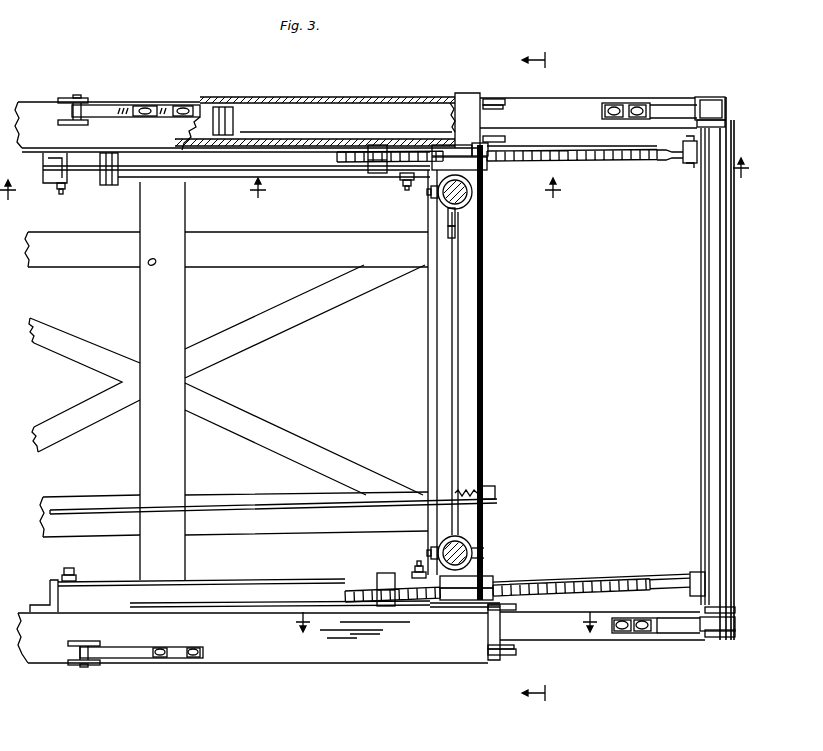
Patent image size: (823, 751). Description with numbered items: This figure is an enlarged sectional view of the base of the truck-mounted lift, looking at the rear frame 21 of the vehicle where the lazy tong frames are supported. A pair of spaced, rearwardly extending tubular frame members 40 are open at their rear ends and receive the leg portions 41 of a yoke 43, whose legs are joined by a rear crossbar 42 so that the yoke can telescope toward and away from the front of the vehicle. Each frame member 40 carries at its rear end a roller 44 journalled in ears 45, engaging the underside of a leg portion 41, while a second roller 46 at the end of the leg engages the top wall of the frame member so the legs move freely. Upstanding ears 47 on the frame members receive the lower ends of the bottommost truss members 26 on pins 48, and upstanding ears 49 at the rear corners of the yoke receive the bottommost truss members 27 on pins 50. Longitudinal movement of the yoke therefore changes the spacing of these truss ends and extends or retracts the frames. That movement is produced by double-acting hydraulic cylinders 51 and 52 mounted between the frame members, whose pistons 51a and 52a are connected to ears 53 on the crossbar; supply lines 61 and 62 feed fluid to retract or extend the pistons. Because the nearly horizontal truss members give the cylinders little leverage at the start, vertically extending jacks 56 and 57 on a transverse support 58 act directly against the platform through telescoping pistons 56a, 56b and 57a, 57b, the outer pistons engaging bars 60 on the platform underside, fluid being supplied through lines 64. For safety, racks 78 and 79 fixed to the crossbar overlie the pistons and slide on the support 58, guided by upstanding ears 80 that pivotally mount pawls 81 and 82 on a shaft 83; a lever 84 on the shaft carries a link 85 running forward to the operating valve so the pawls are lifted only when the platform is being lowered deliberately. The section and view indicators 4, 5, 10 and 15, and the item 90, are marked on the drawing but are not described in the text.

The section line 4- 4 is at (541, 377).
The section line 5- 5 is at (446, 615).
The direction of view 10 is at (375, 188).
The direction of view 15 is at (405, 197).
The rear frame 21 is at (280, 264).
The truss member 26 is at (140, 105).
The truss member 27 is at (657, 103).
The tubular frame member 40 is at (352, 97).
The leg portion 41 is at (590, 98).
The rear crossbar 42 is at (712, 402).
The yoke 43 is at (700, 359).
The roller 44 is at (505, 103).
The ear 45 is at (493, 99).
The second roller 46 is at (235, 124).
The upstanding ear 47 is at (70, 98).
The pin 48 is at (80, 97).
The upstanding ear 49 is at (707, 97).
The pin 50 is at (722, 98).
The hydraulic cylinder 51 is at (318, 583).
The piston 51a is at (603, 577).
The hydraulic cylinder 52 is at (287, 168).
The piston 52a is at (663, 157).
The ear 53 is at (690, 164).
The jack 56 is at (488, 540).
The telescoping piston 56a is at (484, 548).
The telescoping piston 56b is at (484, 558).
The jack 57 is at (473, 192).
The telescoping piston 57a is at (470, 205).
The telescoping piston 57b is at (462, 214).
The transverse support 58 is at (428, 366).
The bar 60 is at (477, 600).
The fluid supply line 61 is at (402, 182).
The fluid supply line 62 is at (60, 195).
The fluid line 64 is at (429, 196).
The rack 78 is at (550, 578).
The rack 79 is at (600, 160).
The upstanding ear 80 is at (487, 168).
The pawl 81 is at (463, 592).
The pawl 82 is at (458, 155).
The shaft 83 is at (487, 393).
The lever 84 is at (495, 494).
The link 85 is at (333, 508).
The cap 90 is at (480, 146).